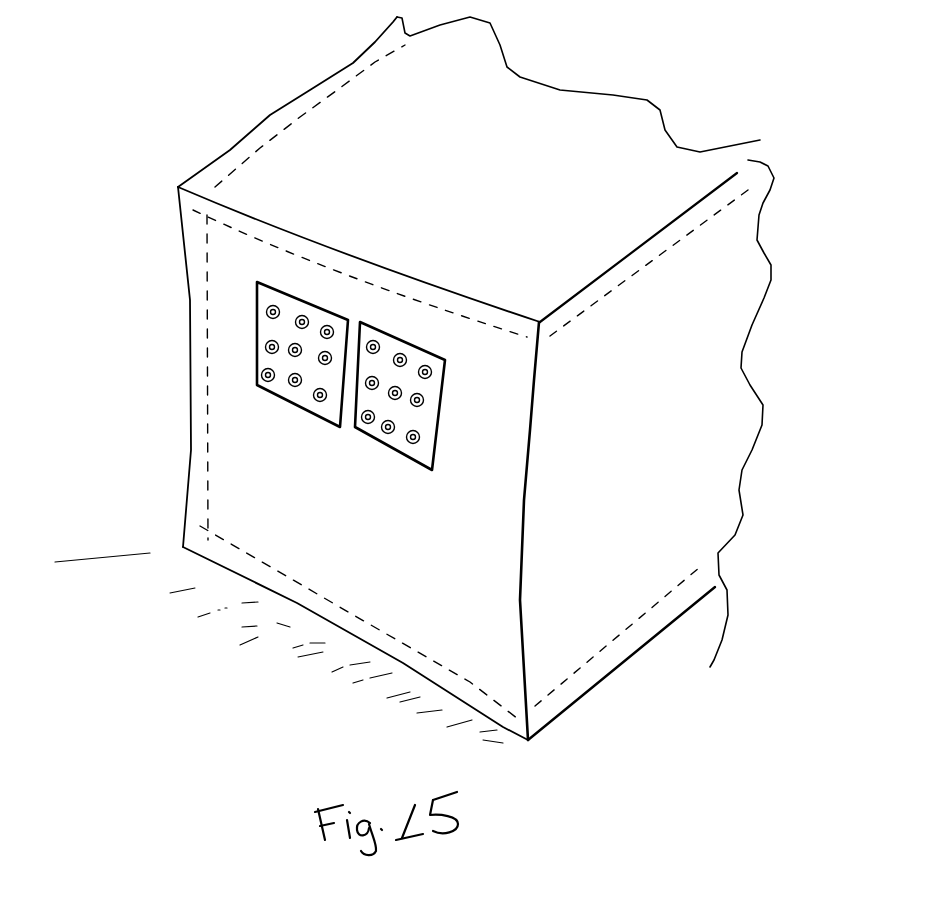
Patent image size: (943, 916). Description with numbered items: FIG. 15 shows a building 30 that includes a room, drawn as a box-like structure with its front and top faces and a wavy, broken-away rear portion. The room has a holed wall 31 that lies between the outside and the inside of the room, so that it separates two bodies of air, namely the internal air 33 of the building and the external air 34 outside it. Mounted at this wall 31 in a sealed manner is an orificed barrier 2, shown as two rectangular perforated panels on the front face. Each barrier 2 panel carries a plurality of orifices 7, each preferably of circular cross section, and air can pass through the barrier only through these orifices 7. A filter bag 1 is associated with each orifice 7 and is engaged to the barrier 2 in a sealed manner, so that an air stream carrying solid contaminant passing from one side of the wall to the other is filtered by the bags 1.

The building 30 is at (418, 378).
The holed wall 31 is at (233, 259).
The internal body of air 33 is at (513, 214).
The external body of air 34 is at (153, 490).
The barrier 2 is at (221, 354).
The filter bag 1 is at (185, 394).
The orifice 7 is at (258, 374).